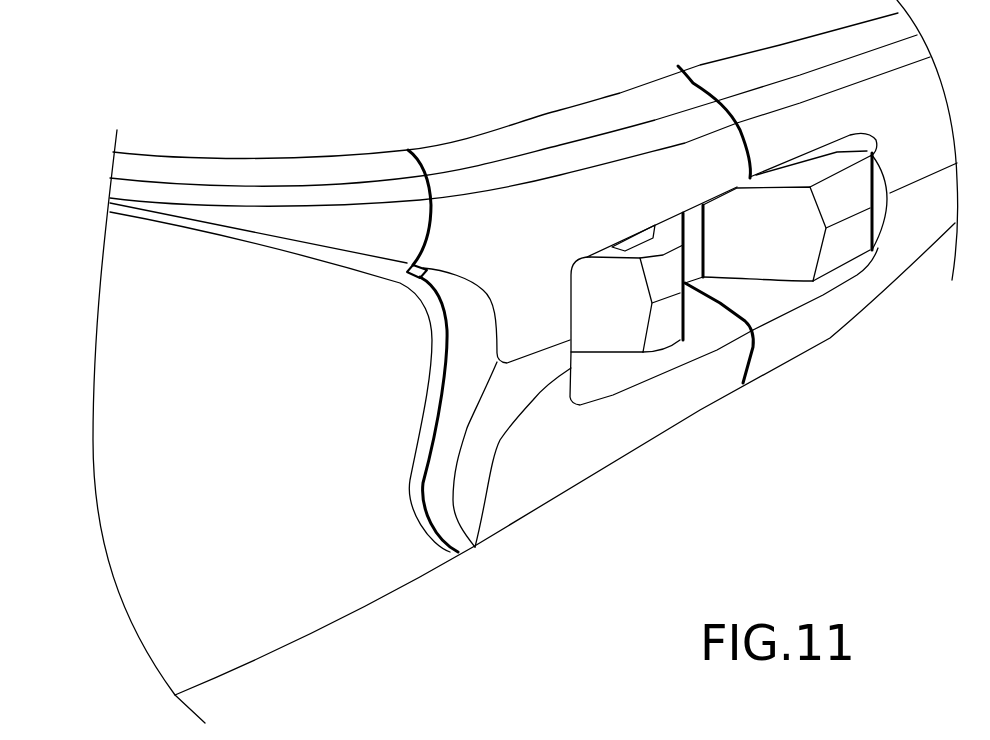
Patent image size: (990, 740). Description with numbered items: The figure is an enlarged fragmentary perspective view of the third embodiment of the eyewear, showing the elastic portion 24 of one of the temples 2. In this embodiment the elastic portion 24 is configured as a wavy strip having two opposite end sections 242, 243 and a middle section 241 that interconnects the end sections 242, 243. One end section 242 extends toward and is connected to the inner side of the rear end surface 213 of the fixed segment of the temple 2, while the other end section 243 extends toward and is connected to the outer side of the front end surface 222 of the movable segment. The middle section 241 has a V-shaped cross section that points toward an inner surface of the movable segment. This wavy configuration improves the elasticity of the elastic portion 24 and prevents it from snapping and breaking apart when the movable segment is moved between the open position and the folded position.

The temple 2 is at (807, 383).
The elastic portion 24 is at (775, 286).
The middle section 241 is at (753, 220).
The end section 242 is at (605, 327).
The end section 243 is at (843, 245).
The front end surface 222 is at (882, 212).
The rear end surface 213 is at (475, 548).